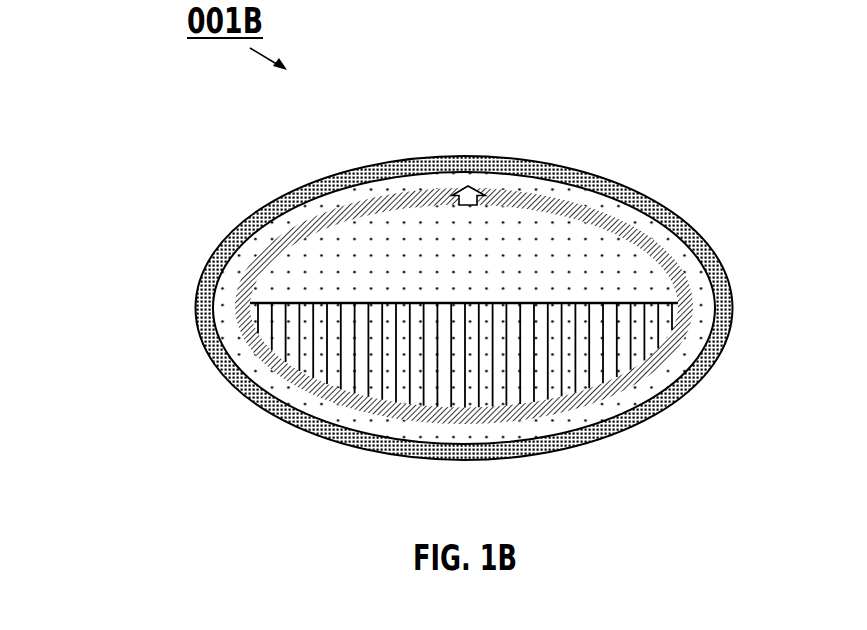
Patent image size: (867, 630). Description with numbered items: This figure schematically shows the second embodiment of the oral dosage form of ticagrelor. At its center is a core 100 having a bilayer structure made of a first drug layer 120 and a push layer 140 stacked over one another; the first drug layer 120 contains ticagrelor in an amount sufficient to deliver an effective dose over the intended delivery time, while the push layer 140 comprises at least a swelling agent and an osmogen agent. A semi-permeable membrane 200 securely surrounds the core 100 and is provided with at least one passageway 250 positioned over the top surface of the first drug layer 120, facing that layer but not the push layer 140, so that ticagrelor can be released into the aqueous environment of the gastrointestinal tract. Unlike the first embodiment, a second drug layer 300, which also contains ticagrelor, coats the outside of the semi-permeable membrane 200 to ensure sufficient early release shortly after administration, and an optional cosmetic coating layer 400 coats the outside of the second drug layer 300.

The core 100 is at (135, 142).
The first drug layer 120 is at (368, 263).
The push layer 140 is at (375, 348).
The semi-permeable membrane 200 is at (675, 325).
The passageway 250 is at (468, 186).
The second drug layer 300 is at (662, 238).
The cosmetic coating layer 400 is at (613, 428).